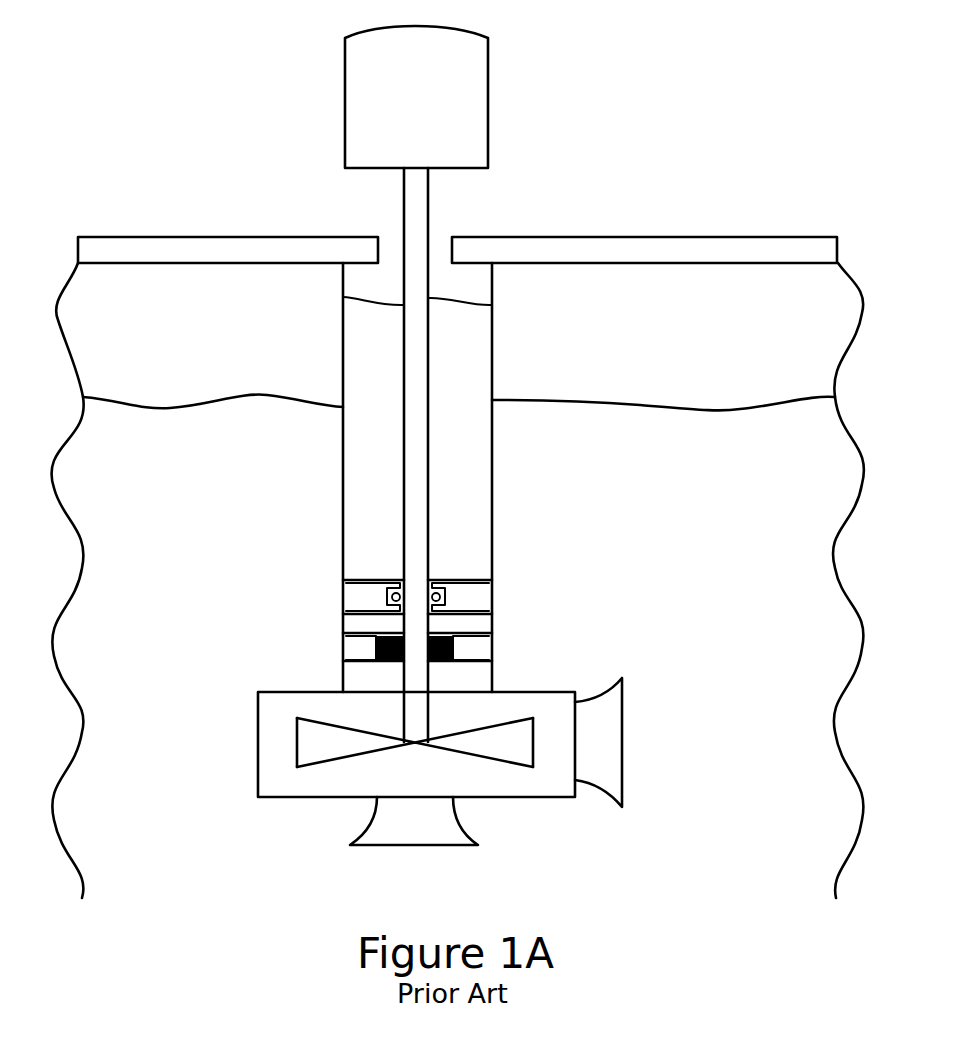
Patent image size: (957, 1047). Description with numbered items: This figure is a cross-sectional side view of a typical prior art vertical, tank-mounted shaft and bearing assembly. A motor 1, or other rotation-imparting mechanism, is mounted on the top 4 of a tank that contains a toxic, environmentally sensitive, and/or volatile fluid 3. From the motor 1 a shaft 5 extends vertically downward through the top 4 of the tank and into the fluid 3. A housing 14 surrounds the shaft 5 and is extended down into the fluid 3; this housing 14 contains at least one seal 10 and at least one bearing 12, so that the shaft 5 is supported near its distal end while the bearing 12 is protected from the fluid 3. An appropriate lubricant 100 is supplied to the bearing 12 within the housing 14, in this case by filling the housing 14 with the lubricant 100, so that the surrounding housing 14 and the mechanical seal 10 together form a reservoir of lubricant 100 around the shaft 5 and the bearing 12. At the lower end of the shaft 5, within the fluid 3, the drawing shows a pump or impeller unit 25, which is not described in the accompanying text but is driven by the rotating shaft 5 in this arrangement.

The motor 1 is at (344, 127).
The top of the tank 4 is at (193, 235).
The fluid 3 is at (742, 467).
The housing 14 is at (343, 371).
The lubricant 100 is at (484, 395).
The shaft 5 is at (404, 362).
The bearing 12 is at (343, 592).
The seal 10 is at (343, 648).
The pump housing with impeller 25 is at (297, 742).